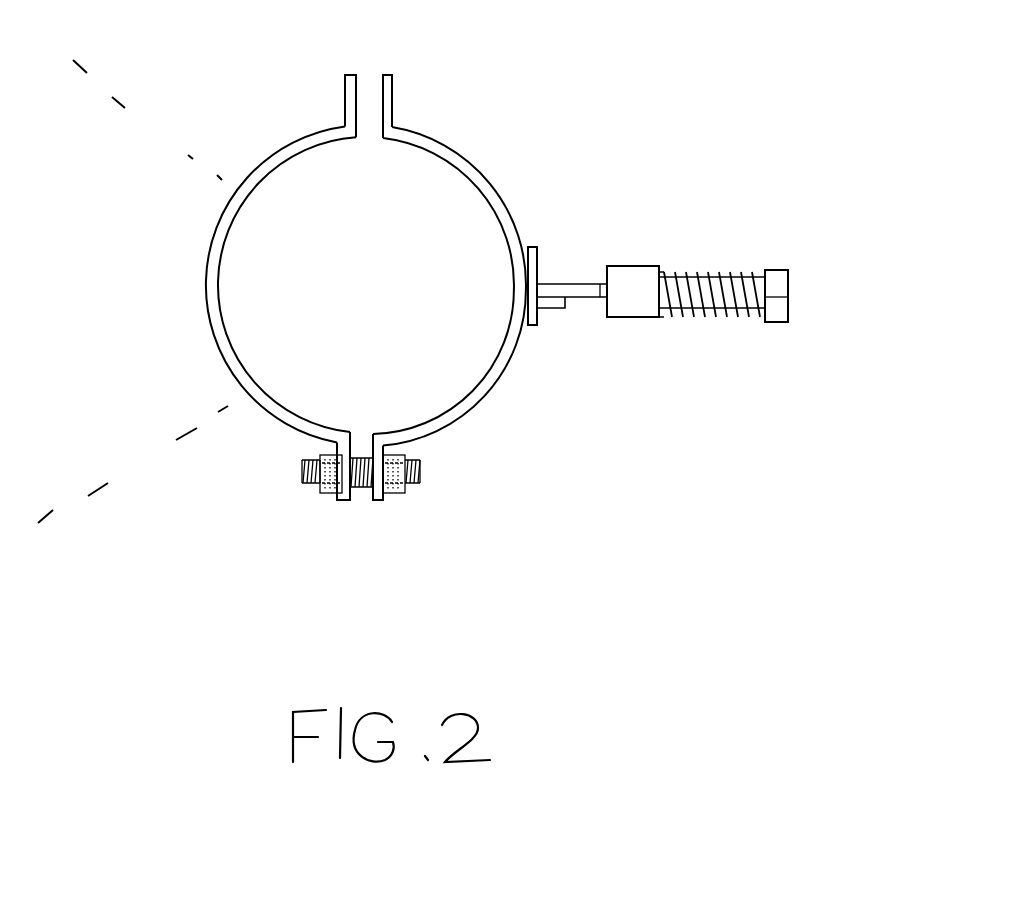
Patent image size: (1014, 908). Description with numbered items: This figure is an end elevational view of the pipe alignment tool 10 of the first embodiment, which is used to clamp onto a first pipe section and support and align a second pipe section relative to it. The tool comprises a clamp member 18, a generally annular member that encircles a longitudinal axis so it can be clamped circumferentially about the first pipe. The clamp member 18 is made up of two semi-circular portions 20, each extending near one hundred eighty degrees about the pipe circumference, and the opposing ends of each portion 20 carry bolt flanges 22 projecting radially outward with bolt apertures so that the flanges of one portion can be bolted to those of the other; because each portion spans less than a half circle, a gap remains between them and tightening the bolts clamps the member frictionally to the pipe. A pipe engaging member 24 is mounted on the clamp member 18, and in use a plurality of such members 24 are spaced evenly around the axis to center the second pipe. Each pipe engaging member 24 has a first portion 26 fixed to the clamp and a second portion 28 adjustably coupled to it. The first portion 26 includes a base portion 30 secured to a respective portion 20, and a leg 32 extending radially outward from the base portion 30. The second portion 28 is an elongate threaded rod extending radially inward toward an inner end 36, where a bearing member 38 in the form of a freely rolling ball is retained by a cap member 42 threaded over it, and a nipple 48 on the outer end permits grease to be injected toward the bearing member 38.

The pipe alignment tool 10 is at (606, 138).
The clamp member 18 is at (488, 417).
The semi-circular portion 20 is at (289, 158).
The bolt flange 22 is at (348, 73).
The pipe engaging member 24 is at (150, 135).
The first portion 26 is at (572, 283).
The second portion 28 is at (738, 286).
The base portion 30 is at (530, 258).
The leg 32 is at (548, 310).
The inner end 36 is at (657, 265).
The bearing member 38 is at (603, 292).
The cap member 42 is at (638, 300).
The nipple 48 is at (788, 294).